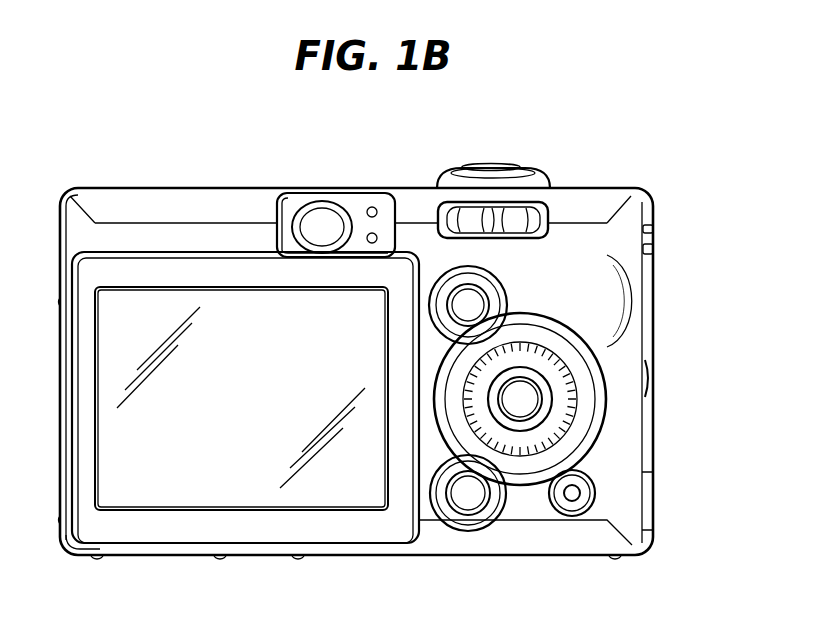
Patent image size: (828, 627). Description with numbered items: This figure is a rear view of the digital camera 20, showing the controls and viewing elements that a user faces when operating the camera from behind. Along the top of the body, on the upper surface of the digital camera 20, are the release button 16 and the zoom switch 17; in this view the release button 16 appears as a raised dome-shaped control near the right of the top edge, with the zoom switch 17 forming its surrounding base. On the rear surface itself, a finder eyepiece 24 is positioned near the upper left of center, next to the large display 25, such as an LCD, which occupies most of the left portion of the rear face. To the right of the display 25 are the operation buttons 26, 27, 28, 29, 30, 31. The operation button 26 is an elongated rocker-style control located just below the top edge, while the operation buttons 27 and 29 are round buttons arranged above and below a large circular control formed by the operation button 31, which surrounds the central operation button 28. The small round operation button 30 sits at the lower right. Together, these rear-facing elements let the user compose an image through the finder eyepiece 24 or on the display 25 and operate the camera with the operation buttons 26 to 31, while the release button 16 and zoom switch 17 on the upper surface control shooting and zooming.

The digital camera 20 is at (178, 198).
The finder eyepiece 24 is at (322, 222).
The release button 16 is at (491, 164).
The zoom switch 17 is at (527, 182).
The operation button 26 is at (522, 220).
The operation button 27 is at (473, 305).
The operation button 28 is at (528, 399).
The operation button 31 is at (577, 413).
The operation button 29 is at (470, 497).
The operation button 30 is at (575, 497).
The display 25 is at (332, 487).